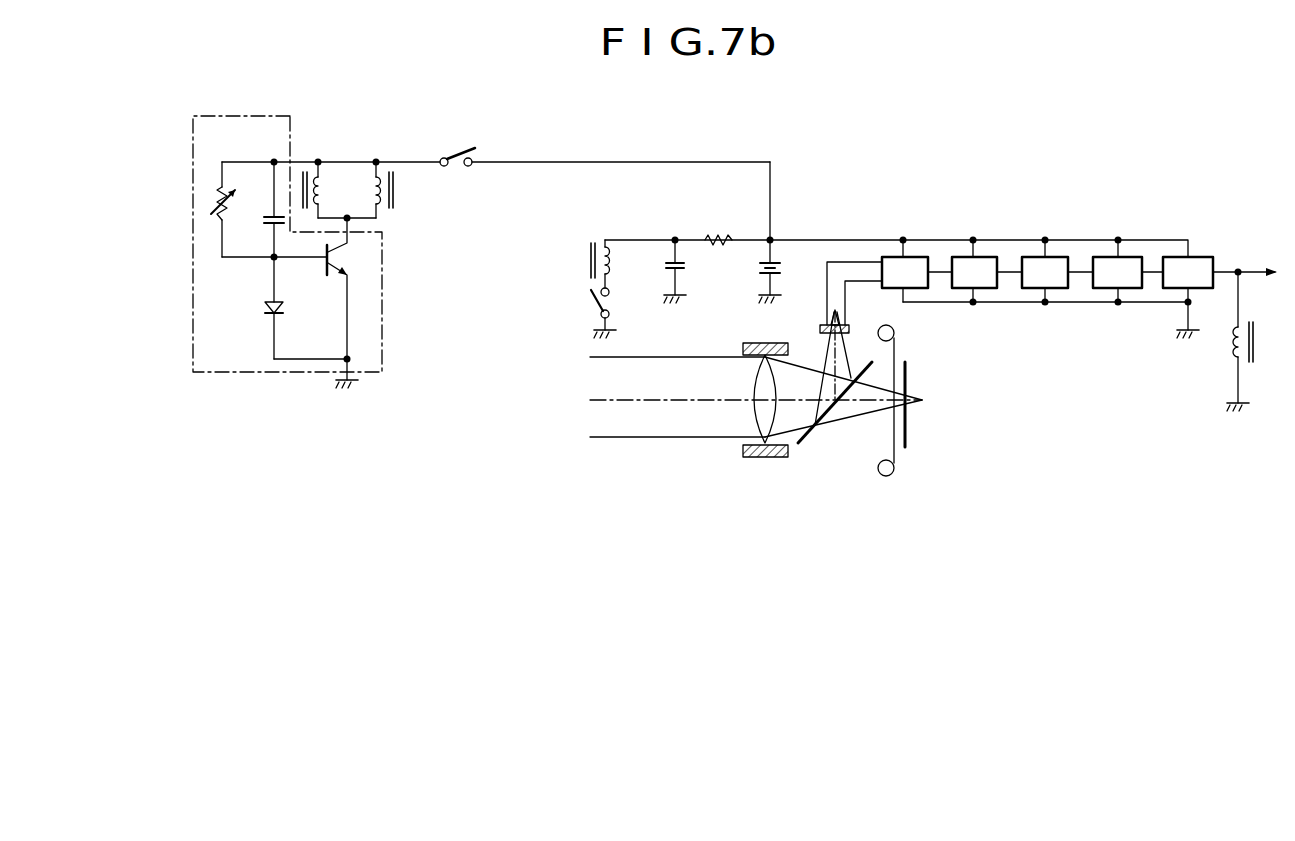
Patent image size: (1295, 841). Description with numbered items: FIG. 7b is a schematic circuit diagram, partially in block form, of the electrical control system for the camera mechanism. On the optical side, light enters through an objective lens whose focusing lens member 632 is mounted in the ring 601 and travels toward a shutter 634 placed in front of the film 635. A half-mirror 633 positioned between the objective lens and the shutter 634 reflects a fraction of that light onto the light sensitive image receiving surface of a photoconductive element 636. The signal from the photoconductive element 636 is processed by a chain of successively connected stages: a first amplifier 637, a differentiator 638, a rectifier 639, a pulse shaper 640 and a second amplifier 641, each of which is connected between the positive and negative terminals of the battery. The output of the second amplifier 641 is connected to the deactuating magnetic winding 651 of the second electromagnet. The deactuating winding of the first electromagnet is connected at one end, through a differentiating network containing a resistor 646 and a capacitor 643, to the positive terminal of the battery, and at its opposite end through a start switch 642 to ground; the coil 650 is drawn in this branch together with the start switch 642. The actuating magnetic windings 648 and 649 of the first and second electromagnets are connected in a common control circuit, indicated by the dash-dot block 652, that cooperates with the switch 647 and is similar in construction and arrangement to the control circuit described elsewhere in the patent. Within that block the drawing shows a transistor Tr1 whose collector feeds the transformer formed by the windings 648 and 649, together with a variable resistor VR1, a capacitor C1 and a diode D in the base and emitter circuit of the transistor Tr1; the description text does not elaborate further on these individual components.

The ring 601 is at (762, 457).
The focusing lens member 632 is at (757, 418).
The half-mirror 633 is at (806, 441).
The shutter 634 is at (893, 466).
The film 635 is at (907, 425).
The photoconductive element 636 is at (847, 324).
The first amplifier 637 is at (905, 271).
The differentiator 638 is at (974, 271).
The rectifier 639 is at (1045, 271).
The pulse shaper 640 is at (1117, 271).
The second amplifier 641 is at (1188, 297).
The start switch 642 is at (607, 303).
The capacitor 643 is at (678, 270).
The resistor 646 is at (719, 239).
The switch 647 is at (460, 168).
The actuating magnetic winding 648 is at (318, 161).
The actuating magnetic winding 649 is at (380, 165).
The coil 650 is at (590, 263).
The deactuating magnetic winding 651 is at (1260, 341).
The oscillator circuit 652 is at (270, 373).
The capacitor C1 is at (270, 220).
The variable resistor VR1 is at (218, 228).
The transistor Tr1 is at (340, 262).
The diode D is at (265, 312).